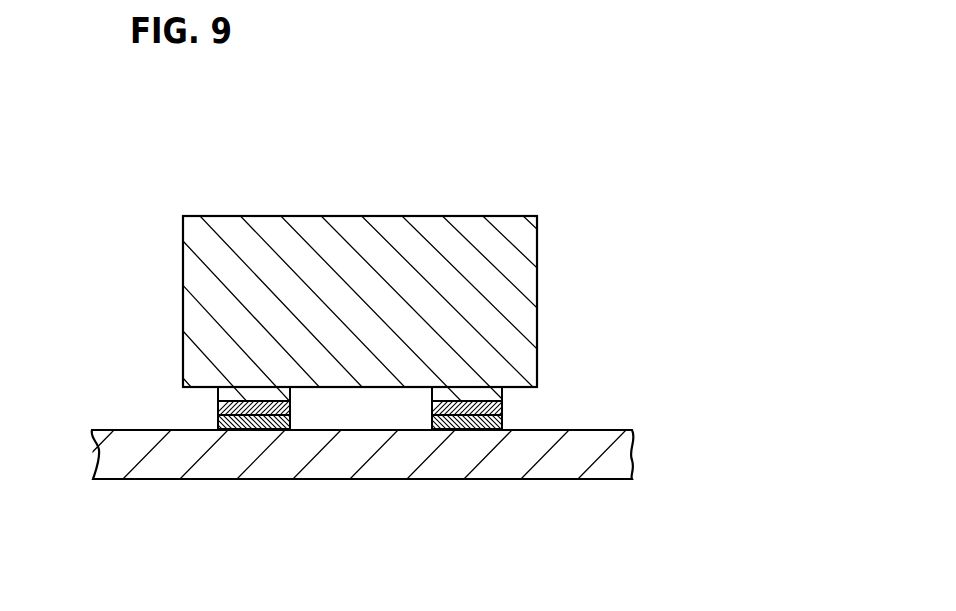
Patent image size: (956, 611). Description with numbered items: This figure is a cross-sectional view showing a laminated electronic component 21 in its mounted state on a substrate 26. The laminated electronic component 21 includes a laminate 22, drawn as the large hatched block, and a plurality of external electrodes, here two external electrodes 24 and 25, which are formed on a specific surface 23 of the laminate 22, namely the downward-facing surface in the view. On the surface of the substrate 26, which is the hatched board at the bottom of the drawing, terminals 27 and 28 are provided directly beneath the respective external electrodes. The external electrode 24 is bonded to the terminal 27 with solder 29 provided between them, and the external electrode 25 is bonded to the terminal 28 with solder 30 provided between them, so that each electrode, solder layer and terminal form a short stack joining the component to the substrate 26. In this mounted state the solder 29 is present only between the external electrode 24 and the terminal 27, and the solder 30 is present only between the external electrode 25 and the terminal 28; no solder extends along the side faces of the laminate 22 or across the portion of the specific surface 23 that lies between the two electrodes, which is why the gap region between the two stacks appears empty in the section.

The laminated electronic component 21 is at (383, 248).
The laminate 22 is at (474, 206).
The specific surface 23 is at (358, 387).
The external electrode 24 is at (253, 393).
The external electrode 25 is at (463, 393).
The substrate 26 is at (617, 458).
The terminal 27 is at (247, 423).
The terminal 28 is at (458, 428).
The solder 29 is at (218, 404).
The solder 30 is at (503, 411).